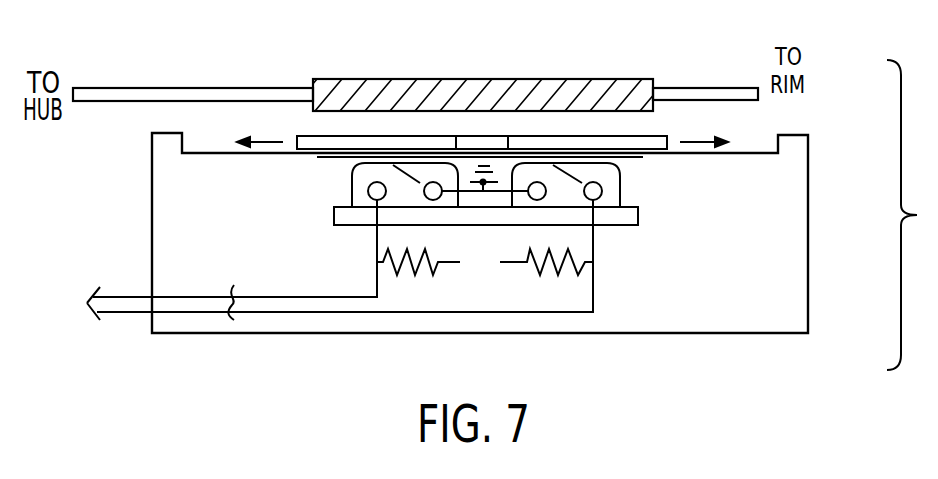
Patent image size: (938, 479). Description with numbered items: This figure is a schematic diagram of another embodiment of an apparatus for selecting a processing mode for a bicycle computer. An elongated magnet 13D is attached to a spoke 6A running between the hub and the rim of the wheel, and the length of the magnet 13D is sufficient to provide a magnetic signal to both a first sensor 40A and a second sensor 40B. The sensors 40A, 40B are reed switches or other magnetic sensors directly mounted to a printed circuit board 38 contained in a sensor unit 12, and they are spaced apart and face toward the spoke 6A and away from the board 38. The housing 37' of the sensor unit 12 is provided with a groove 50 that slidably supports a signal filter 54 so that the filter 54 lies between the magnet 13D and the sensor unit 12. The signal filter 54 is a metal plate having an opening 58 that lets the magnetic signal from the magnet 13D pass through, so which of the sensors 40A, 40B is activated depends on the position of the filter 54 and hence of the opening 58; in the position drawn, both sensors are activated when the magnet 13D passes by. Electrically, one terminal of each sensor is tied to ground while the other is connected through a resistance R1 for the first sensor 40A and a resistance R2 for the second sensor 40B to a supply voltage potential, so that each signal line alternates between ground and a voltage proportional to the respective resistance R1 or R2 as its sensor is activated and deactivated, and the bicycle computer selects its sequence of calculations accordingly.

The spoke 6A is at (268, 87).
The elongated magnet 13D is at (352, 89).
The opening 58 is at (484, 140).
The signal filter 54 is at (661, 138).
The groove 50 is at (755, 137).
The sensor unit 12 is at (808, 220).
The first sensor 40A is at (352, 191).
The second sensor 40B is at (622, 191).
The printed circuit board 38 is at (334, 216).
The housing 37' is at (470, 260).
The resistance R1 is at (417, 275).
The resistance R2 is at (558, 272).